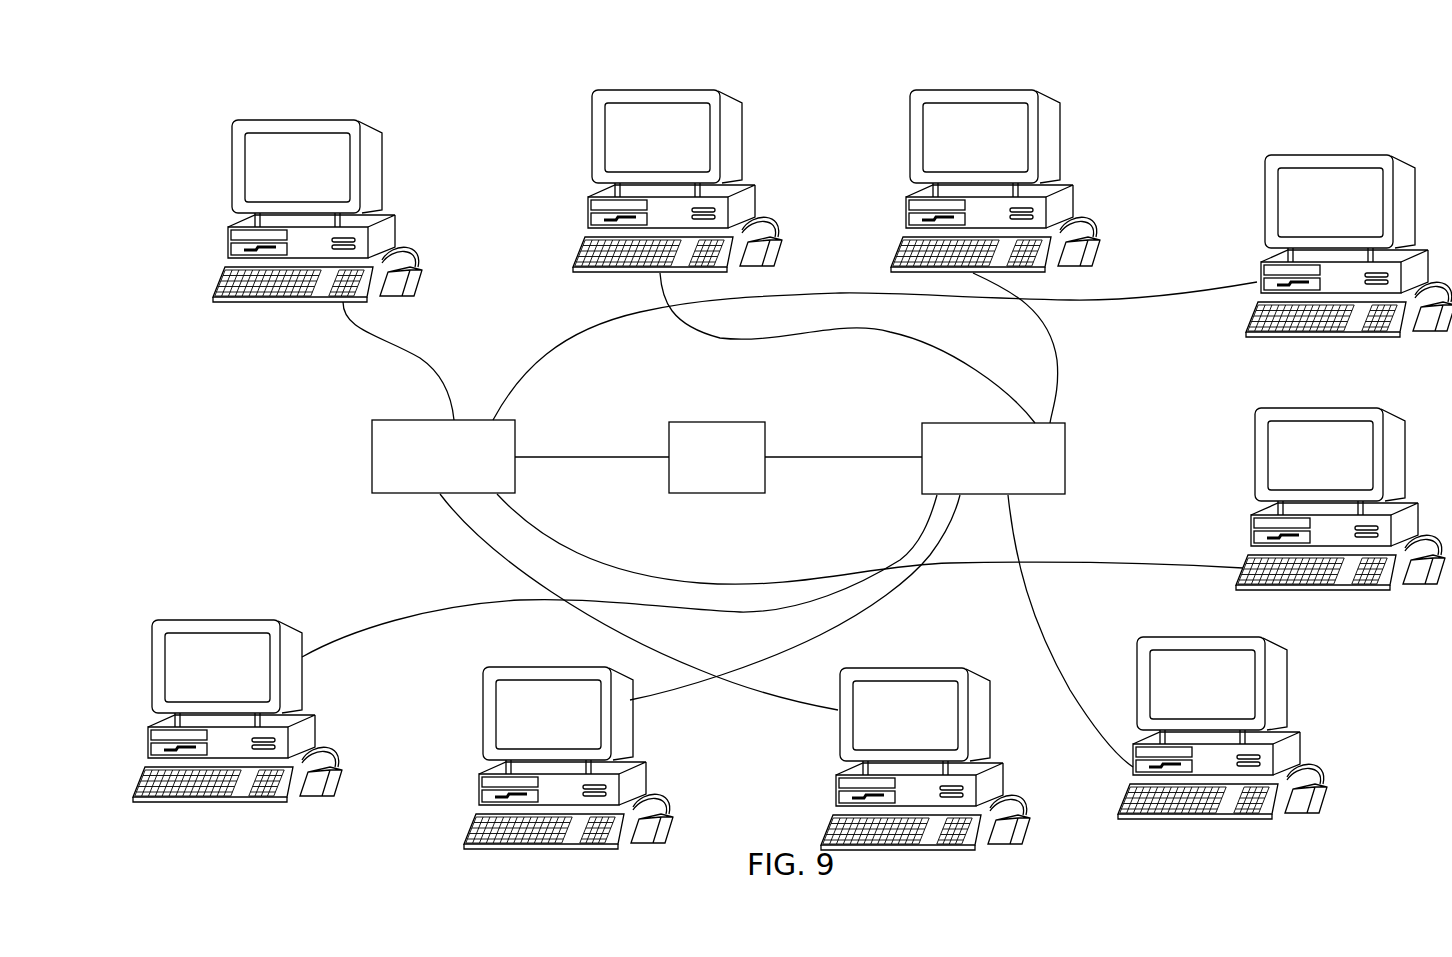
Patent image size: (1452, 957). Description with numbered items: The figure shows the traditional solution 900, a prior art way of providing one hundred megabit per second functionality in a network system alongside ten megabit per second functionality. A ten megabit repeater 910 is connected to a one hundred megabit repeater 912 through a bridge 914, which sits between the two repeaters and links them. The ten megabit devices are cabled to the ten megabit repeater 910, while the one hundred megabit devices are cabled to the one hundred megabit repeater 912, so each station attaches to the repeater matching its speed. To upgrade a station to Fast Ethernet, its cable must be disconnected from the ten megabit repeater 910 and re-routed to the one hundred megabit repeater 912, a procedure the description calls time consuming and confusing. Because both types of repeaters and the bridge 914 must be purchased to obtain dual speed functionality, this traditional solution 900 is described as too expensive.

The traditional solution 900 is at (183, 178).
The 10 Mbps repeater 910 is at (372, 449).
The 100 Mbps repeater 912 is at (1065, 457).
The bridge 914 is at (668, 440).